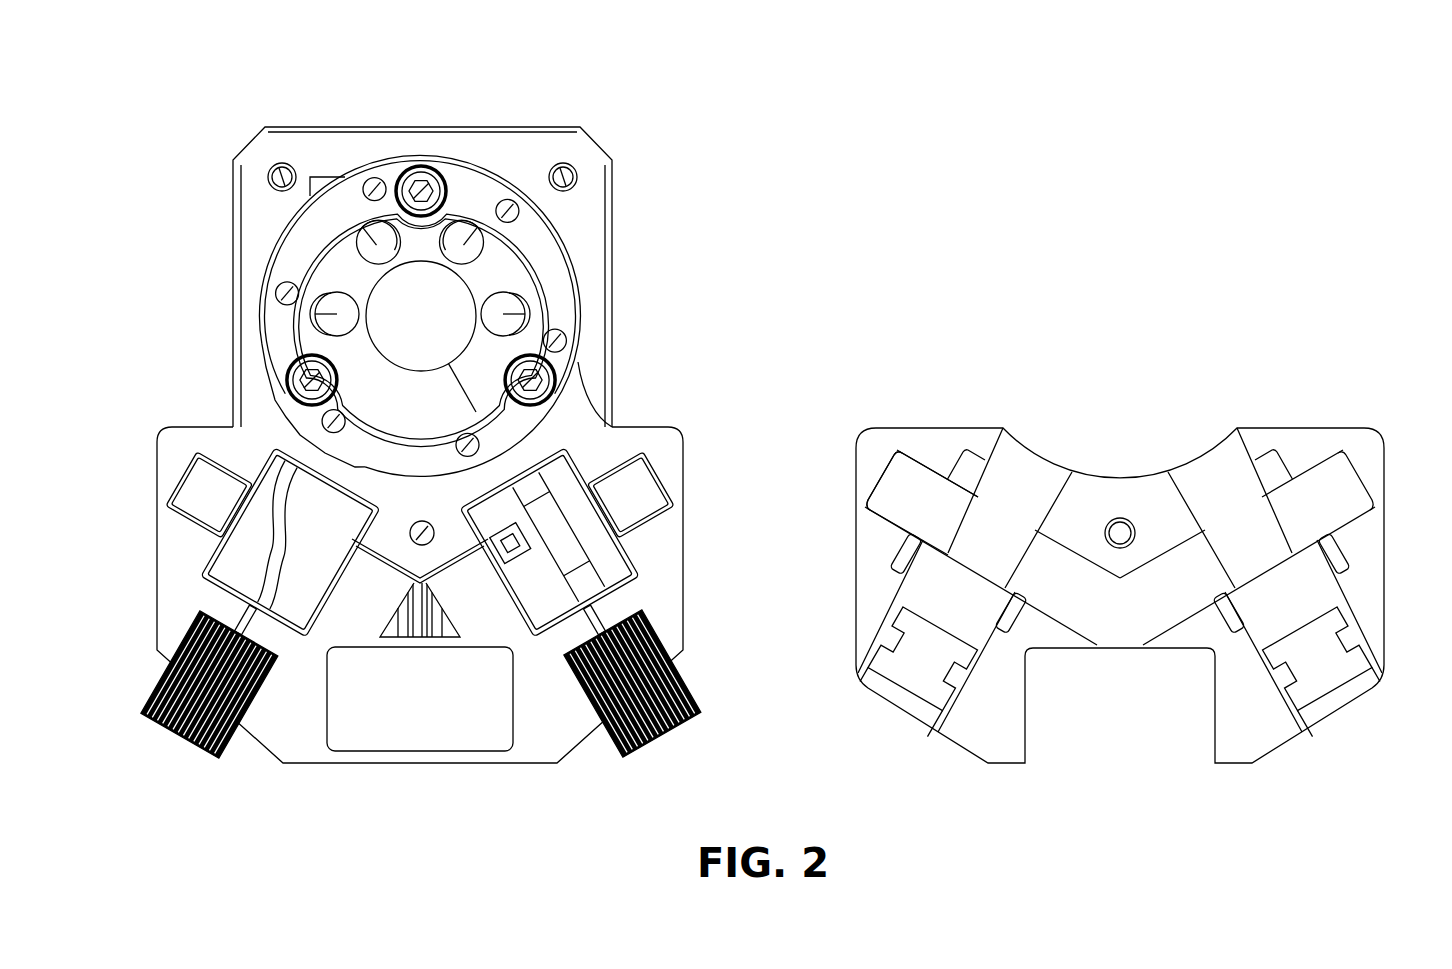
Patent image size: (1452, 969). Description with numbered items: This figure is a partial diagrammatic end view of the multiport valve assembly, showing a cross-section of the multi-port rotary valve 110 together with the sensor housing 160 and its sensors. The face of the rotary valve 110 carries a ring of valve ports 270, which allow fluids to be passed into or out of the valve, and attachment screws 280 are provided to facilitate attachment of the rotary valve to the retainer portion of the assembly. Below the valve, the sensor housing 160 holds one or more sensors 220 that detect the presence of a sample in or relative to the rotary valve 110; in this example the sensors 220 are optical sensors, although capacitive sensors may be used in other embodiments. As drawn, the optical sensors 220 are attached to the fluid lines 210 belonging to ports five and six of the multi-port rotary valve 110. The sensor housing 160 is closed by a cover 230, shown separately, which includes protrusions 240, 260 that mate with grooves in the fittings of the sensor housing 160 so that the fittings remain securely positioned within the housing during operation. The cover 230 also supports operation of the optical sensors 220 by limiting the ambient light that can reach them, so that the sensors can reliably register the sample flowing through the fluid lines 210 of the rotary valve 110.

The sensor housing 160 is at (205, 96).
The multi-port rotary valve 110 is at (570, 248).
The fluid lines 210 is at (567, 437).
The sensors 220 is at (490, 240).
The cover 230 is at (1370, 427).
The protrusion 240 is at (890, 470).
The protrusion 260 is at (1218, 470).
The valve ports 270 is at (524, 302).
The attachment screws 280 is at (375, 178).